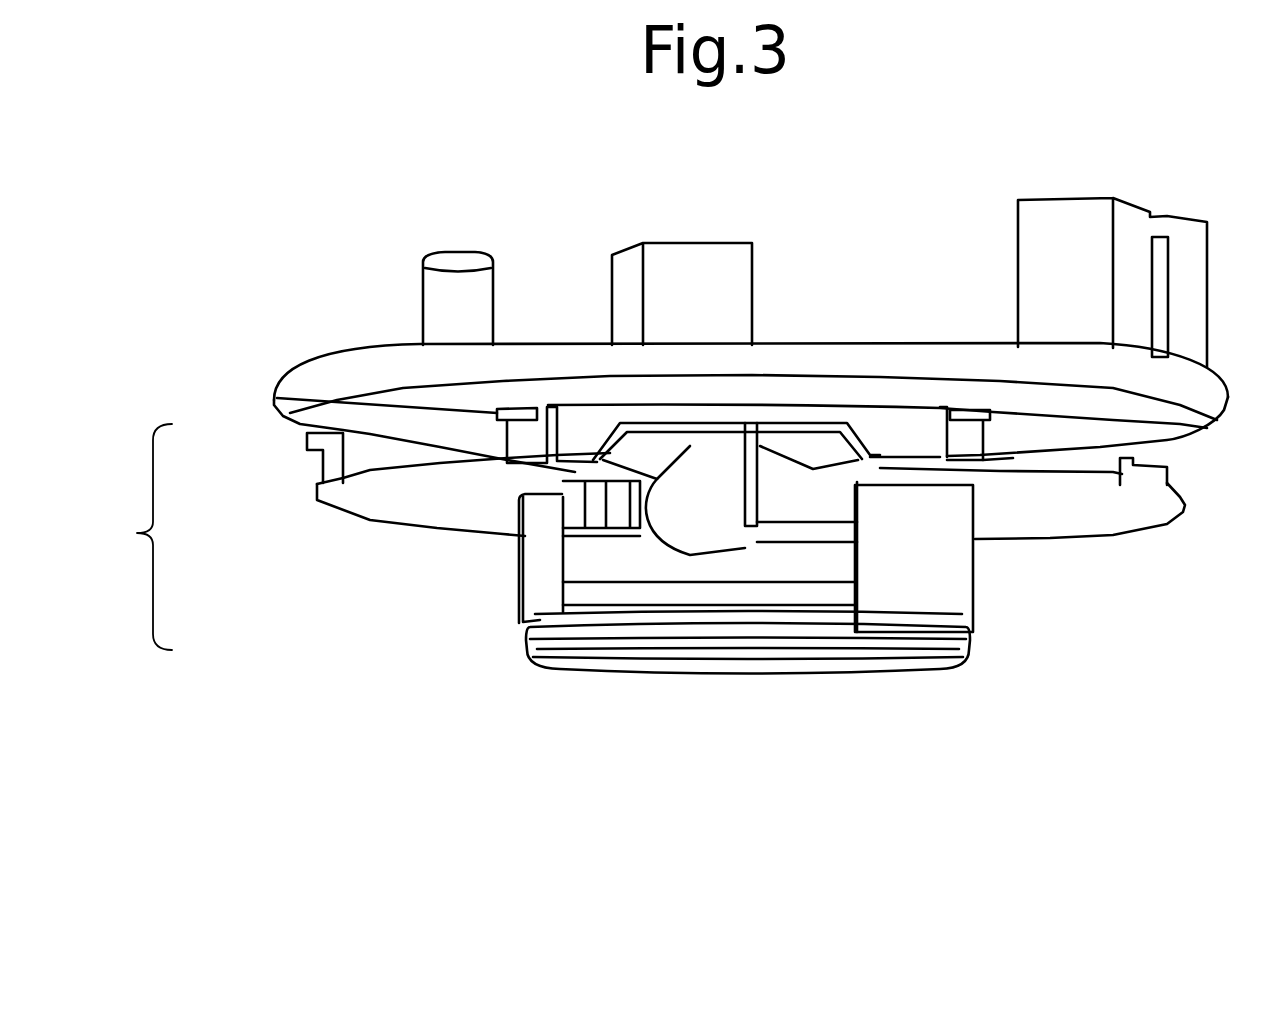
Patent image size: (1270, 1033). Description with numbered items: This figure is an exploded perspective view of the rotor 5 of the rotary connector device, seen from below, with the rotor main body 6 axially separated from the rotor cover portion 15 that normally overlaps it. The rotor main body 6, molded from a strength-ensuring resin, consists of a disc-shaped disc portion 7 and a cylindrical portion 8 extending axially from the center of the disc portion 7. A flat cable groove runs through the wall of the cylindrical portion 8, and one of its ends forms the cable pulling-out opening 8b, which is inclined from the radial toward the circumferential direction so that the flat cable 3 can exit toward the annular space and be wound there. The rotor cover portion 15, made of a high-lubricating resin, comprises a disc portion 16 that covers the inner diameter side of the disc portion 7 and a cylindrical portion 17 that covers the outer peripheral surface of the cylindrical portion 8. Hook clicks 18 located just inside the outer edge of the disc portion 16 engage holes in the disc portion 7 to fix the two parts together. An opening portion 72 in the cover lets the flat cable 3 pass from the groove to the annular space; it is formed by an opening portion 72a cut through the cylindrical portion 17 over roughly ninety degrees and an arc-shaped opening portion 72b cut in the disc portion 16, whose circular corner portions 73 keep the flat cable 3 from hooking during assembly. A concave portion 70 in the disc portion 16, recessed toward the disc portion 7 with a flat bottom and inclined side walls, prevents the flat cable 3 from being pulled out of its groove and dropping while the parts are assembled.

The flat cable 3 is at (730, 495).
The rotor 5 is at (137, 533).
The rotor main body 6 is at (270, 410).
The disc portion 7 is at (1053, 397).
The cylindrical portion 8 is at (893, 425).
The cable pulling-out opening 8b is at (640, 515).
The rotor cover portion 15 is at (513, 583).
The disc portion 16 is at (1102, 507).
The cylindrical portion 17 is at (947, 597).
The hook clicks 18 is at (330, 400).
The concave portion 70 is at (703, 428).
The opening portion 72 is at (908, 783).
The opening portion 72a is at (853, 563).
The opening portion 72b is at (800, 442).
The corner portions 73 is at (527, 487).